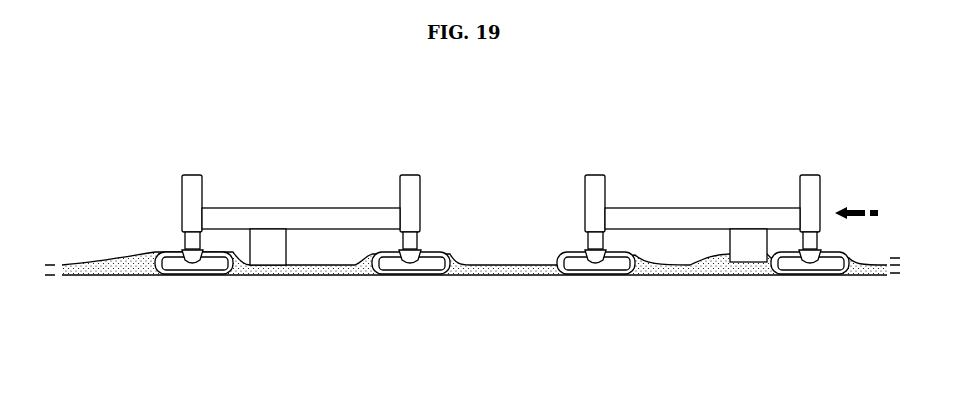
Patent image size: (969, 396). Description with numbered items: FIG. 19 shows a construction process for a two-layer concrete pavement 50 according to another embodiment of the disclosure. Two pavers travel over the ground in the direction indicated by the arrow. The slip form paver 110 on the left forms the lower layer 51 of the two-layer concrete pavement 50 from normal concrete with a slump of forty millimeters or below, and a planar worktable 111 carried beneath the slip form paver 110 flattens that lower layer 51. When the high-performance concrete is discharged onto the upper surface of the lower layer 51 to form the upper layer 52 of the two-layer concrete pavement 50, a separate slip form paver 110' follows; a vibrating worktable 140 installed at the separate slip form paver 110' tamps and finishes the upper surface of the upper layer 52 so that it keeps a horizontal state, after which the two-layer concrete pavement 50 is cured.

The two-layer concrete pavement 50 is at (751, 284).
The lower layer 51 is at (657, 277).
The upper layer 52 is at (862, 277).
The slip form paver 110 is at (302, 197).
The slip form paver 110' is at (703, 197).
The planar worktable 111 is at (266, 258).
The vibrating worktable 140 is at (748, 243).